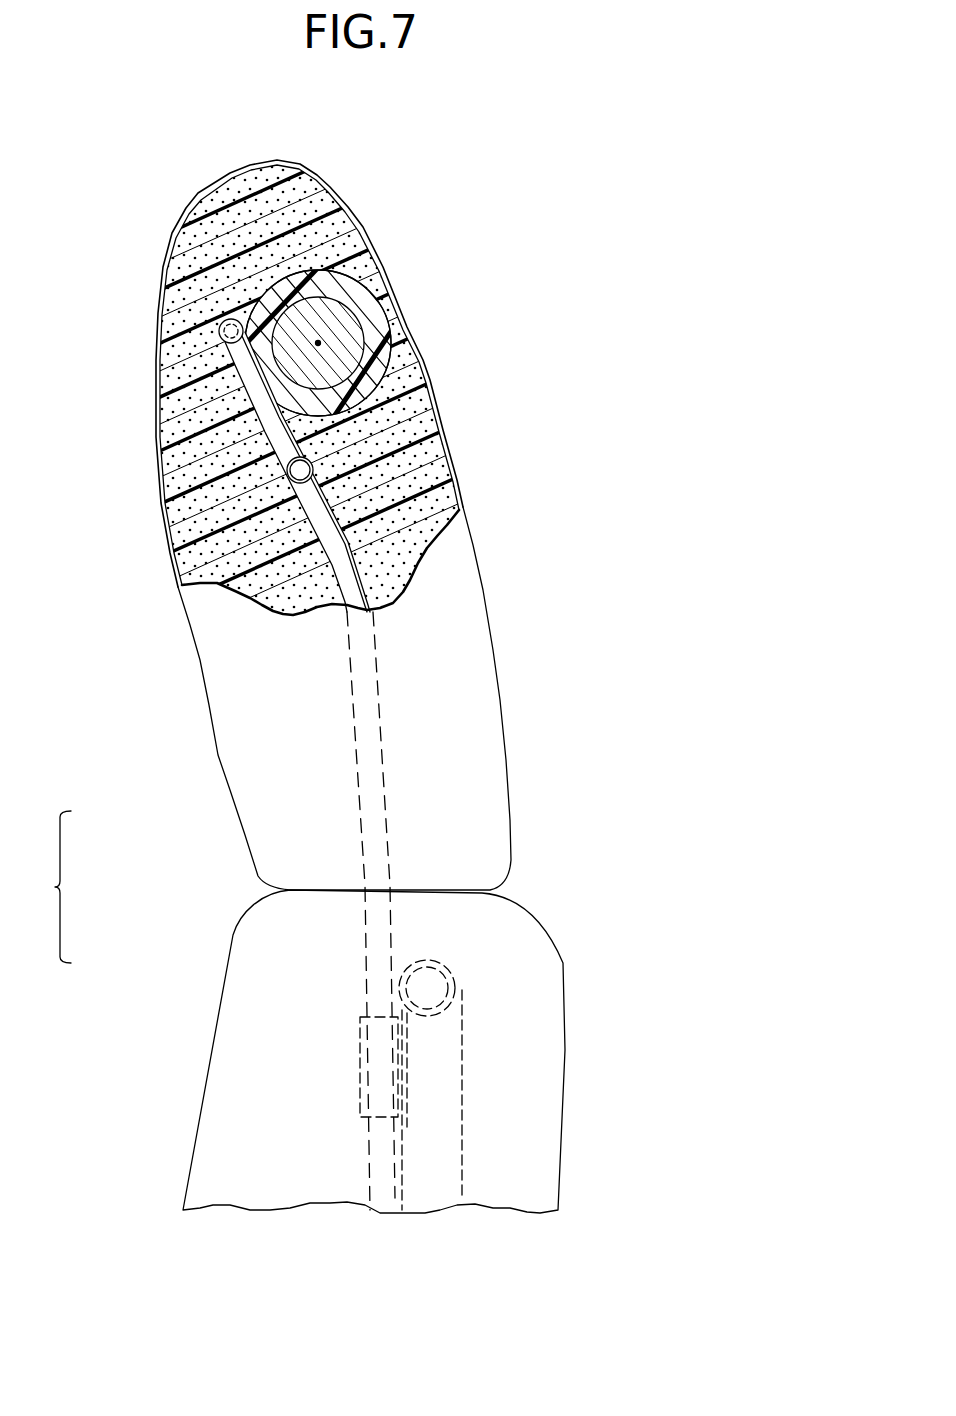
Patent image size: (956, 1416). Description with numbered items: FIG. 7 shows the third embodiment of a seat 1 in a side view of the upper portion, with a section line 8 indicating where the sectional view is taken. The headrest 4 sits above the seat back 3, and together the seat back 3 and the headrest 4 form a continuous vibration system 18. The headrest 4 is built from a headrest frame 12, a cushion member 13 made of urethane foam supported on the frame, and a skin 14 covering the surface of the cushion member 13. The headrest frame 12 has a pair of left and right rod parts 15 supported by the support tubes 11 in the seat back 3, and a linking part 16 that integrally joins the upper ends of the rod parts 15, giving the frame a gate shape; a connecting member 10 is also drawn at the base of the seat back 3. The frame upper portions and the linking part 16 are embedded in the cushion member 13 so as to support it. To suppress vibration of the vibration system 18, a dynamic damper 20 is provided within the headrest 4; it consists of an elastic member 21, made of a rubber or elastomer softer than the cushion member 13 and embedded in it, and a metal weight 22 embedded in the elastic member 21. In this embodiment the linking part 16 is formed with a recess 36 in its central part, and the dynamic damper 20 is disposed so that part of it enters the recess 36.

The robot hand 1 is at (607, 752).
The seat back 3 is at (207, 1085).
The headrest 4 is at (216, 755).
The section line VIII-VIII 8 is at (594, 850).
The actuator 10 is at (462, 1077).
The support tube 11 is at (360, 1063).
The headrest frame 12 is at (310, 525).
The cushion member 13 is at (203, 200).
The skin 14 is at (277, 161).
The rod part 15 is at (343, 545).
The linking part 16 is at (221, 323).
The vibration system 18 is at (50, 887).
The dynamic damper 20 is at (367, 343).
The elastic member 21 is at (373, 302).
The weight 22 is at (337, 360).
The recess 36 is at (284, 442).